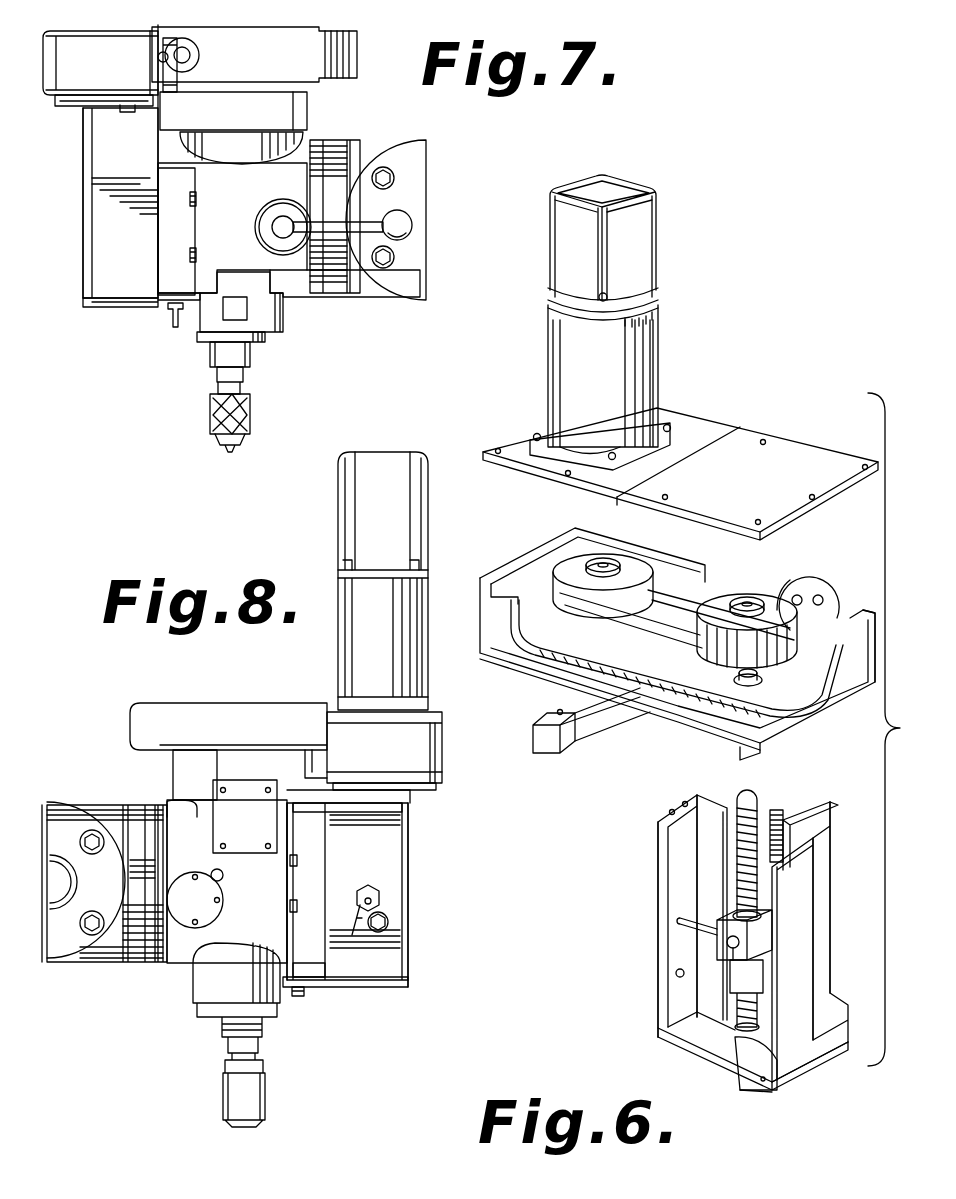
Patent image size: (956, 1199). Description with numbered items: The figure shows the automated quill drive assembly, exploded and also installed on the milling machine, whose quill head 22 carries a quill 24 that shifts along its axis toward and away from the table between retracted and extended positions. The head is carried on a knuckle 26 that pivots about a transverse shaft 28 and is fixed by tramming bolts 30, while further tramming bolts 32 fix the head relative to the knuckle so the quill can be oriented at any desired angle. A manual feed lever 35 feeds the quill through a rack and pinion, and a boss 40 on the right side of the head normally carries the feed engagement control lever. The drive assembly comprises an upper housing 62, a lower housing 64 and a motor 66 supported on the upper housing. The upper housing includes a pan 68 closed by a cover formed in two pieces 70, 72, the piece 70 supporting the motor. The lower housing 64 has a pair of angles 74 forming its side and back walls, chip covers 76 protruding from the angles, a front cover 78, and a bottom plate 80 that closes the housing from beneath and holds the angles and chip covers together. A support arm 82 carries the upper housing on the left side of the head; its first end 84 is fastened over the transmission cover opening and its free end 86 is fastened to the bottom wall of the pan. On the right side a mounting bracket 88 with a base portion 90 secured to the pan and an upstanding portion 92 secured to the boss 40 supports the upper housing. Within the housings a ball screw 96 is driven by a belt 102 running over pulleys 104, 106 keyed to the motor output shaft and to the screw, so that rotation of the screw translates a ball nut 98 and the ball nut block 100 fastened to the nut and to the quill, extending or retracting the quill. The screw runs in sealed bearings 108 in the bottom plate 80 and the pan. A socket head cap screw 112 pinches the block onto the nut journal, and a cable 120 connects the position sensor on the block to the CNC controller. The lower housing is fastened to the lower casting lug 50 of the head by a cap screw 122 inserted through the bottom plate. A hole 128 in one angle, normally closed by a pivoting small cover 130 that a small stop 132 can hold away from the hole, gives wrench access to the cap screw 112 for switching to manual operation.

In FIG. 7, the quill head 22 is at (365, 52).
In FIG. 8, the quill head 22 is at (172, 702).
In FIG. 7, the quill 24 is at (266, 338).
In FIG. 8, the quill 24 is at (205, 1011).
In FIG. 7, the knuckle 26 is at (352, 146).
In FIG. 8, the knuckle 26 is at (103, 965).
In FIG. 7, the shaft 28 is at (414, 224).
In FIG. 8, the shaft 28 is at (56, 883).
In FIG. 7, the tramming bolts 30 is at (396, 177).
In FIG. 8, the tramming bolts 30 is at (81, 838).
In FIG. 7, the tramming bolts 32 is at (191, 253).
In FIG. 8, the tramming bolts 32 is at (294, 855).
In FIG. 7, the manual feed lever 35 is at (362, 222).
In FIG. 7, the boss 40 is at (201, 58).
In FIG. 7, the cast lug 50 is at (167, 295).
In FIG. 8, the cast lug 50 is at (308, 963).
In FIG. 7, the upper housing 62 is at (131, 108).
In FIG. 8, the upper housing 62 is at (420, 786).
In FIG. 6, the upper housing 62 is at (784, 401).
In FIG. 7, the lower housing 64 is at (82, 281).
In FIG. 8, the lower housing 64 is at (412, 994).
In FIG. 6, the lower housing 64 is at (645, 1053).
In FIG. 8, the motor 66 is at (335, 653).
In FIG. 6, the motor 66 is at (659, 363).
In FIG. 7, the pan 68 is at (76, 82).
In FIG. 8, the pan 68 is at (443, 757).
In FIG. 6, the pan 68 is at (498, 566).
In FIG. 8, the cover piece 70 is at (442, 719).
In FIG. 6, the cover piece 70 is at (708, 426).
In FIG. 7, the cover piece 72 is at (120, 36).
In FIG. 6, the cover piece 72 is at (803, 451).
In FIG. 7, the angles 74 is at (93, 222).
In FIG. 8, the angles 74 is at (396, 853).
In FIG. 6, the angles 74 is at (670, 862).
In FIG. 7, the chip covers 76 is at (200, 190).
In FIG. 8, the chip covers 76 is at (293, 883).
In FIG. 6, the chip covers 76 is at (778, 797).
In FIG. 7, the front cover 78 is at (86, 172).
In FIG. 6, the front cover 78 is at (748, 1083).
In FIG. 7, the bottom plate 80 is at (101, 309).
In FIG. 8, the bottom plate 80 is at (333, 988).
In FIG. 6, the bottom plate 80 is at (780, 1078).
In FIG. 8, the support arm 82 is at (313, 775).
In FIG. 6, the support arm 82 is at (585, 730).
In FIG. 8, the first end 84 is at (226, 782).
In FIG. 8, the second free end 86 is at (386, 795).
In FIG. 6, the second free end 86 is at (548, 740).
In FIG. 7, the mounting bracket 88 is at (182, 95).
In FIG. 6, the mounting bracket 88 is at (788, 575).
In FIG. 6, the base portion 90 is at (822, 642).
In FIG. 6, the upstanding portion 92 is at (815, 585).
In FIG. 6, the ball screw 96 is at (742, 798).
In FIG. 6, the ball nut 98 is at (720, 955).
In FIG. 6, the ball nut block 100 is at (758, 935).
In FIG. 6, the belt 102 is at (665, 633).
In FIG. 6, the pulley 104 is at (572, 556).
In FIG. 6, the pulley 106 is at (757, 597).
In FIG. 6, the sealed bearings 108 is at (733, 681).
In FIG. 6, the socket head cap screw 112 is at (680, 925).
In FIG. 6, the bus or cable 120 is at (788, 812).
In FIG. 7, the cap screw 122 is at (175, 328).
In FIG. 8, the cap screw 122 is at (297, 998).
In FIG. 8, the hole 128 is at (389, 922).
In FIG. 6, the hole 128 is at (675, 977).
In FIG. 8, the small cover 130 is at (368, 885).
In FIG. 8, the small stop 132 is at (350, 934).